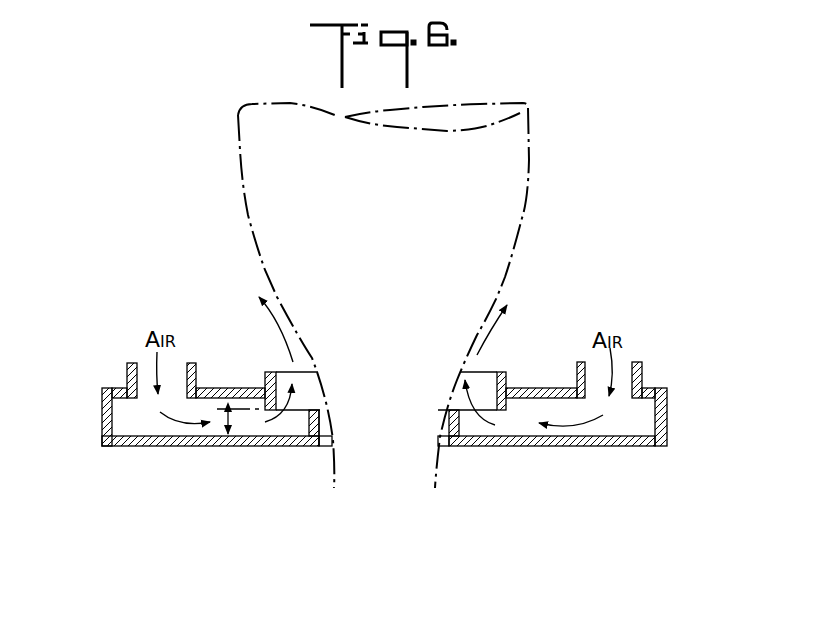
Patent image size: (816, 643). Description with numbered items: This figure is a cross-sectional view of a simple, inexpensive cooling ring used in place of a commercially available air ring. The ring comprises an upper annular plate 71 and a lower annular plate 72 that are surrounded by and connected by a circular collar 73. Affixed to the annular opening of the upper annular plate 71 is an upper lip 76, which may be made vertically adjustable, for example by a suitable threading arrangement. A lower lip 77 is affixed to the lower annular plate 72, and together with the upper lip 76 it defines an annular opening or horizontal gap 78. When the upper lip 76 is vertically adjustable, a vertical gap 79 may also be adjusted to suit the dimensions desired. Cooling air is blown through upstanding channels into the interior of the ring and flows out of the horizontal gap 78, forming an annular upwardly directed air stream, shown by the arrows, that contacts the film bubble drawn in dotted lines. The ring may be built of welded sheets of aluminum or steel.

The upper annular plate 71 is at (546, 389).
The lower annular plate 72 is at (598, 441).
The circular collar 73 is at (667, 417).
The upper lip 76 is at (266, 373).
The lower lip 77 is at (462, 427).
The horizontal gap 78 is at (485, 375).
The vertical gap 79 is at (231, 423).